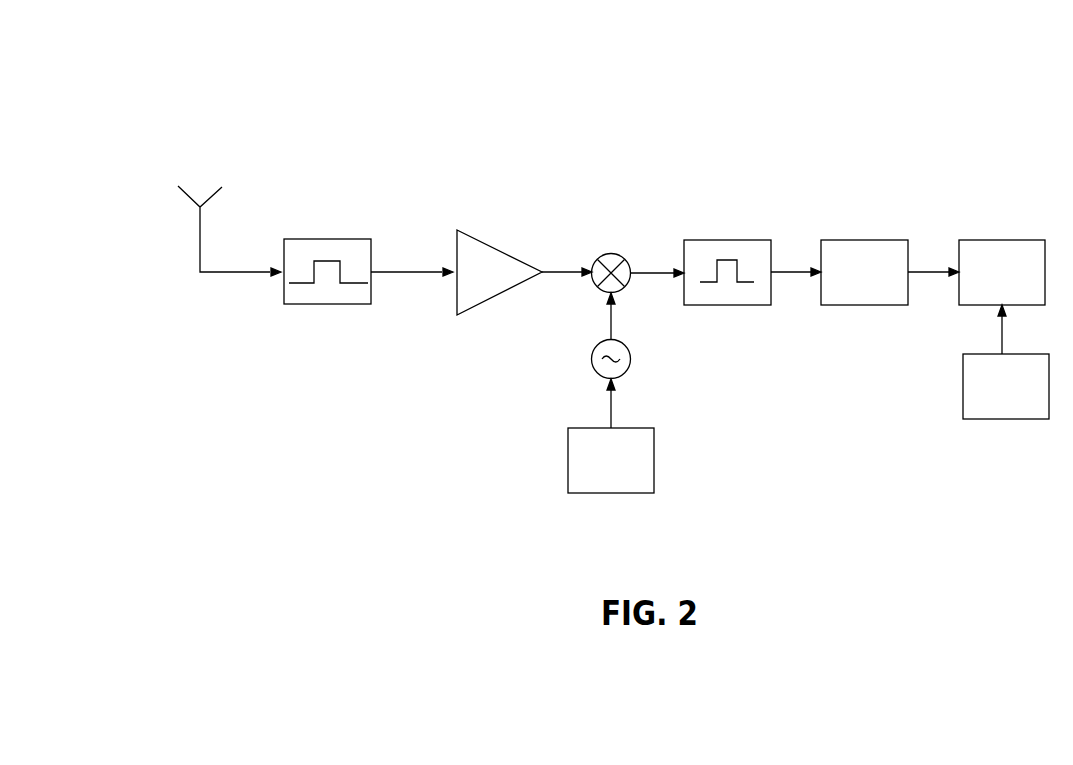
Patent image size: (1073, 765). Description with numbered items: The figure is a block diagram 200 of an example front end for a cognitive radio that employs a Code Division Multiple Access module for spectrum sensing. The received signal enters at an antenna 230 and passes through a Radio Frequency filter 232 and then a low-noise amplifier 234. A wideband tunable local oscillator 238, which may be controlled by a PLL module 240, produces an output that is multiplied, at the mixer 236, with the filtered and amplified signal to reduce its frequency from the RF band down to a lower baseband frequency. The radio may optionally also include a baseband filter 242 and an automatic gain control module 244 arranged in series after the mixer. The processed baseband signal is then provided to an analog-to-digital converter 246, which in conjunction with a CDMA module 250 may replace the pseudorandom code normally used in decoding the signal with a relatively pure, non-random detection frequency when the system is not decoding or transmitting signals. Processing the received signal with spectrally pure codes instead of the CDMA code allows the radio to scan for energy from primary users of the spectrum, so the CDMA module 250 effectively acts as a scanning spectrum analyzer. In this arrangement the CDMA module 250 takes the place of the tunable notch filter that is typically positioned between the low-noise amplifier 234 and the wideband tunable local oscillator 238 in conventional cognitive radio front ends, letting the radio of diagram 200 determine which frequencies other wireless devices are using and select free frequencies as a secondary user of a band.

The diagram 200 is at (935, 52).
The antenna 230 is at (225, 155).
The Radio Frequency (RF) filter 232 is at (343, 209).
The low-noise amplifier 234 is at (472, 208).
The multiplication (mixer) 236 is at (599, 230).
The wideband tunable local oscillator 238 is at (578, 337).
The PLL module 240 is at (578, 406).
The baseband filter 242 is at (730, 215).
The automatic gain control module 244 is at (858, 219).
The analog-to-digital (A/D) converter 246 is at (988, 215).
The CDMA module 250 is at (957, 347).